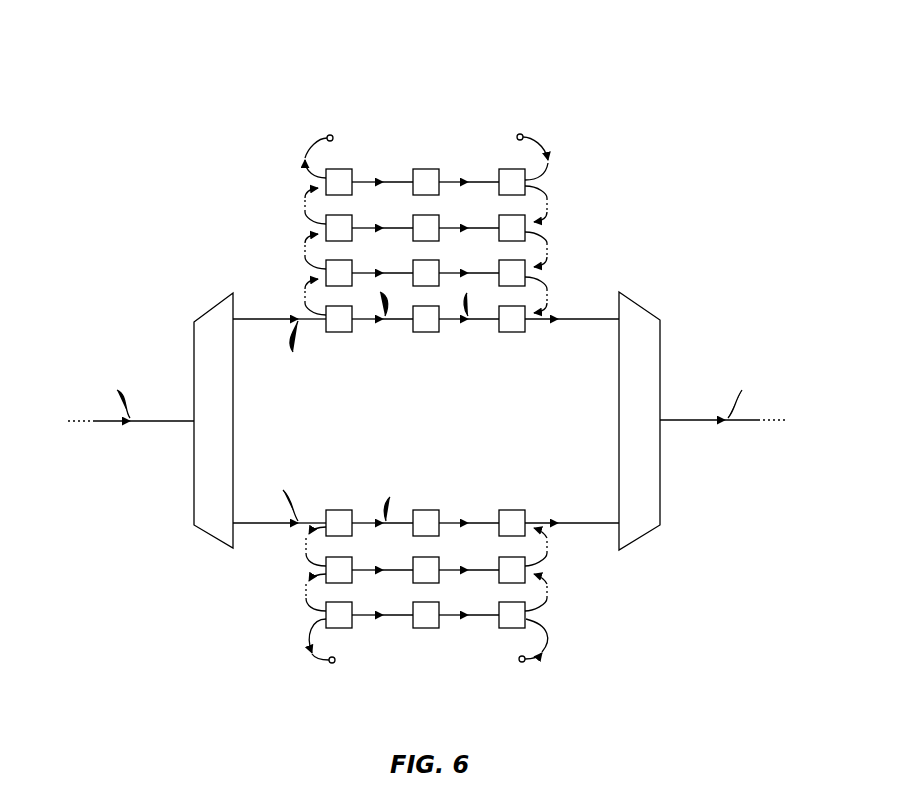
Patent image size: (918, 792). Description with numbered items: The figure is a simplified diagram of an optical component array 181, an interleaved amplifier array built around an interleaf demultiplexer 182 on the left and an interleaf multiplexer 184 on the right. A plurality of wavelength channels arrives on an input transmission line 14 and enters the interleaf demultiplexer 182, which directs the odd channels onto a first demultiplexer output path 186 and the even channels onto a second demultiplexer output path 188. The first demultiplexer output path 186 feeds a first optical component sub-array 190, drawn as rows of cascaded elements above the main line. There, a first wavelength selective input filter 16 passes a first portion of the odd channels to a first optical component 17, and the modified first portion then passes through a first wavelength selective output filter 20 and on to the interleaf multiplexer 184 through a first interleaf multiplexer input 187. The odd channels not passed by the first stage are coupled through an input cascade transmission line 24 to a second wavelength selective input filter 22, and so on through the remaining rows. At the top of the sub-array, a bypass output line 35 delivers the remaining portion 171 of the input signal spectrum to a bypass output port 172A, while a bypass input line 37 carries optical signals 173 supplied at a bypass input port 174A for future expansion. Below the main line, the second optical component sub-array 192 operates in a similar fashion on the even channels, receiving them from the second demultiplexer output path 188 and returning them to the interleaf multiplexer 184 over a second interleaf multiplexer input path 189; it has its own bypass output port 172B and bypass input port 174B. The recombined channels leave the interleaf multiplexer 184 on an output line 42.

The input transmission line 14 is at (163, 422).
The output optical fiber 42 is at (685, 421).
The first wavelength selective input filter 16 is at (338, 332).
The first optical component 17 is at (425, 333).
The first wavelength selective output filter 20 is at (513, 332).
The second wavelength selective input filter 22 is at (338, 260).
The input cascade transmission line 24 is at (307, 300).
The bypass output line 35 is at (305, 152).
The bypass input line 37 is at (547, 174).
The remaining portion of the input signal spectrum 171 is at (303, 160).
The optical signals 173 is at (553, 160).
The bypass output port 172A is at (328, 135).
The bypass input port 174A is at (521, 134).
The bypass output port 172B is at (332, 663).
The bypass input port 174B is at (522, 662).
The optical component array 181 is at (477, 72).
The interleaf demultiplexer 182 is at (217, 308).
The interleaf multiplexer 184 is at (642, 305).
The first demultiplexer output path 186 is at (270, 316).
The first interleaf multiplexer input 187 is at (575, 318).
The second demultiplexer output path 188 is at (273, 525).
The second interleaf multiplexer input path 189 is at (580, 522).
The first optical component sub-array 190 is at (645, 202).
The second optical component sub-array 192 is at (650, 614).